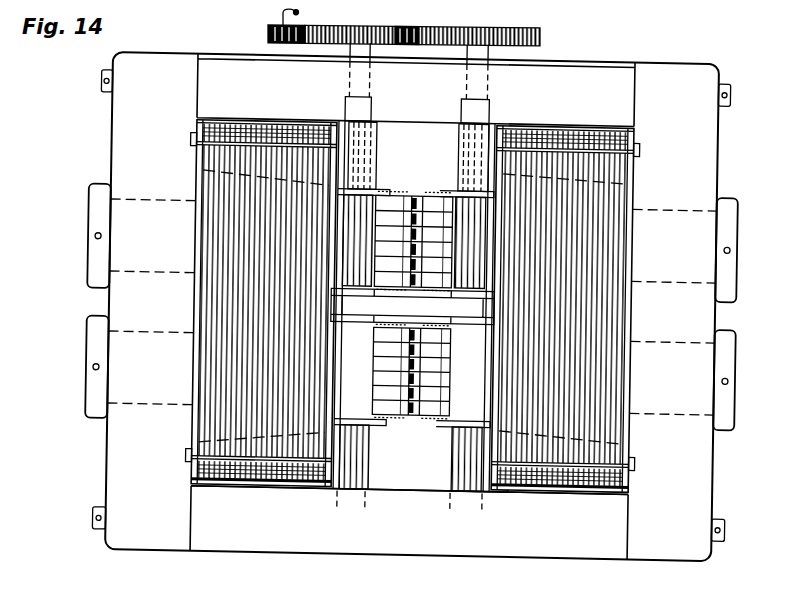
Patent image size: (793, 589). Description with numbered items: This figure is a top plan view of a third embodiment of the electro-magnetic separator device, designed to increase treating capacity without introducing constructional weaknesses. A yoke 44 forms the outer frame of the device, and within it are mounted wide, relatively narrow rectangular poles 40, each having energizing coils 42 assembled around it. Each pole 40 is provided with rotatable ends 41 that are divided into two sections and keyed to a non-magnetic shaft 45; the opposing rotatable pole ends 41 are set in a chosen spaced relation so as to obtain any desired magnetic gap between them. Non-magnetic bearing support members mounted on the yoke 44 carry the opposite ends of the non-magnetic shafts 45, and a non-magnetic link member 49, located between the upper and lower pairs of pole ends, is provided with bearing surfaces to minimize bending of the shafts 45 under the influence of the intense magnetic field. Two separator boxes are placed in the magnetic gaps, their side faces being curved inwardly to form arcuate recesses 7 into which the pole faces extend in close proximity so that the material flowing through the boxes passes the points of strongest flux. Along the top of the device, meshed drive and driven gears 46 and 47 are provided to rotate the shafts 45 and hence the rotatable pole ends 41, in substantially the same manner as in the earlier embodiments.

The arcuate recess 7 is at (421, 189).
The rectangular pole 40 is at (211, 444).
The rotatable pole end 41 is at (361, 199).
The energizing coil 42 is at (273, 482).
The yoke 44 is at (561, 66).
The non-magnetic shaft 45 is at (378, 145).
The drive gear 46 is at (268, 27).
The driven gear 47 is at (380, 22).
The non-magnetic link member 49 is at (498, 294).